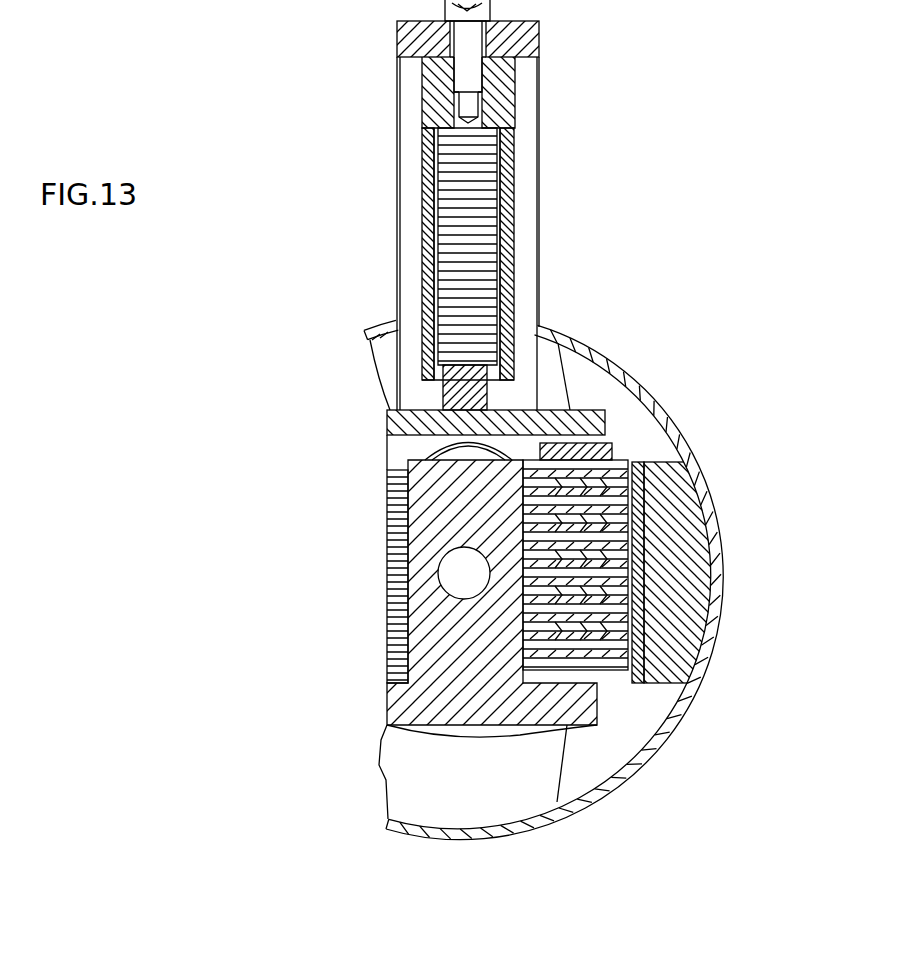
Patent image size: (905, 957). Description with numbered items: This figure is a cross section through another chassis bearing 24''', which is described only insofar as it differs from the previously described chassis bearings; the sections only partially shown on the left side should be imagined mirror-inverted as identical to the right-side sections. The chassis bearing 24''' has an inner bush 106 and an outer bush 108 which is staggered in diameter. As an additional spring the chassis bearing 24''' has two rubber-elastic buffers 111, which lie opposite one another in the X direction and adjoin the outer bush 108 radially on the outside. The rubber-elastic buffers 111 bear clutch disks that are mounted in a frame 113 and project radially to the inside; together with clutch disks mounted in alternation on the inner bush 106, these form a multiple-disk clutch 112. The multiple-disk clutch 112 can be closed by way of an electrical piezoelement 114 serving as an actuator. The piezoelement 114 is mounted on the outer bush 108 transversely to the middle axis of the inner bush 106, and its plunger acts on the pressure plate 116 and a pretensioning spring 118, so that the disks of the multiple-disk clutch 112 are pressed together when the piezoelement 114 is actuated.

The chassis bearing 24''' is at (515, 420).
The inner bush 106 is at (640, 676).
The outer bush 108 is at (620, 370).
The rubber-elastic buffers 111 is at (640, 606).
The multiple-disk clutch 112 is at (633, 550).
The frame 113 is at (630, 466).
The piezoelement 114 is at (470, 297).
The pressure plate 116 is at (388, 423).
The pretensioning spring 118 is at (537, 407).